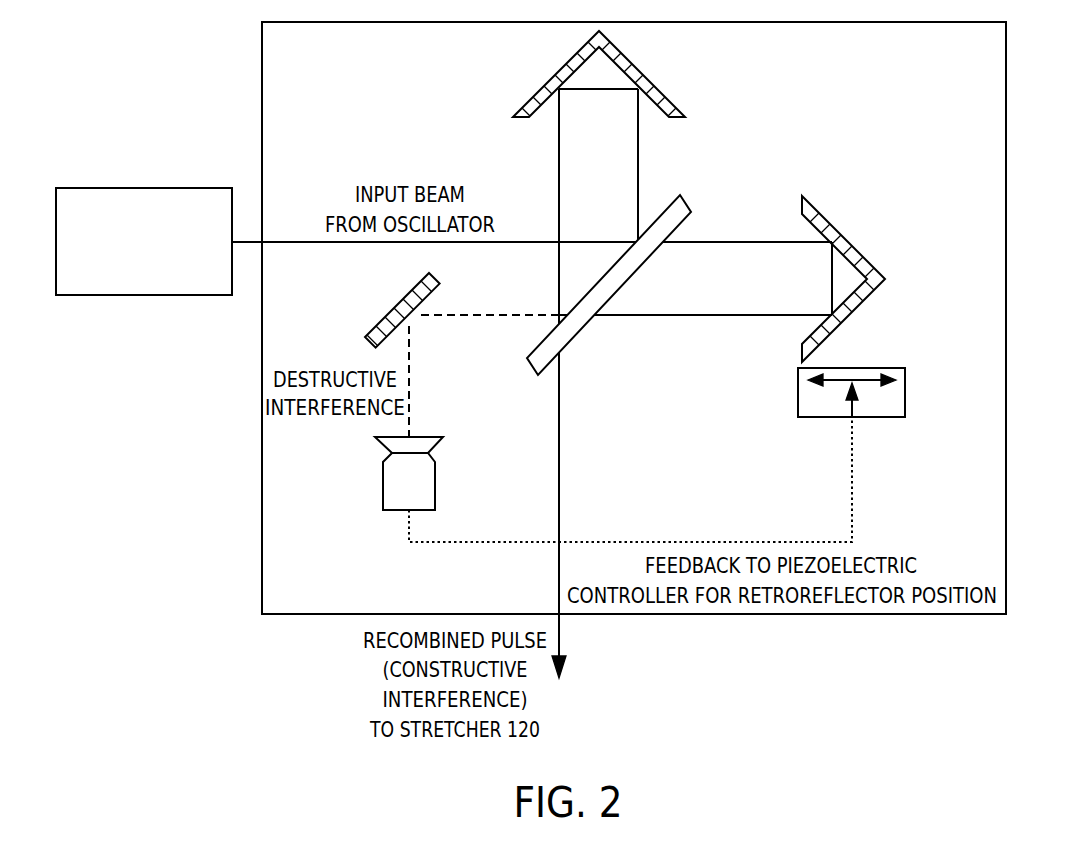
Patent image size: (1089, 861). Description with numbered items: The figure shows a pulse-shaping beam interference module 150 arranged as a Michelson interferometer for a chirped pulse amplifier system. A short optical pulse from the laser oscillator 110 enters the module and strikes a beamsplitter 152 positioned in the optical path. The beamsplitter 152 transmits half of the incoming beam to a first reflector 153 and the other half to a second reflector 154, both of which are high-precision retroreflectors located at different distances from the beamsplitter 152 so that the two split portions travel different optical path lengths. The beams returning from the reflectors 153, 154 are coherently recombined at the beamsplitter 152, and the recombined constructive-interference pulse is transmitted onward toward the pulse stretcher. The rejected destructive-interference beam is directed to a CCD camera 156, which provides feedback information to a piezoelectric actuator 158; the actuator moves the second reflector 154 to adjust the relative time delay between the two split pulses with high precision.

The laser oscillator 110 is at (183, 188).
The beam interference module 150 is at (1006, 115).
The beamsplitter 152 is at (685, 203).
The first reflector 153 is at (643, 72).
The second reflector 154 is at (836, 228).
The CCD camera 156 is at (383, 487).
The piezoelectric actuator 158 is at (905, 388).